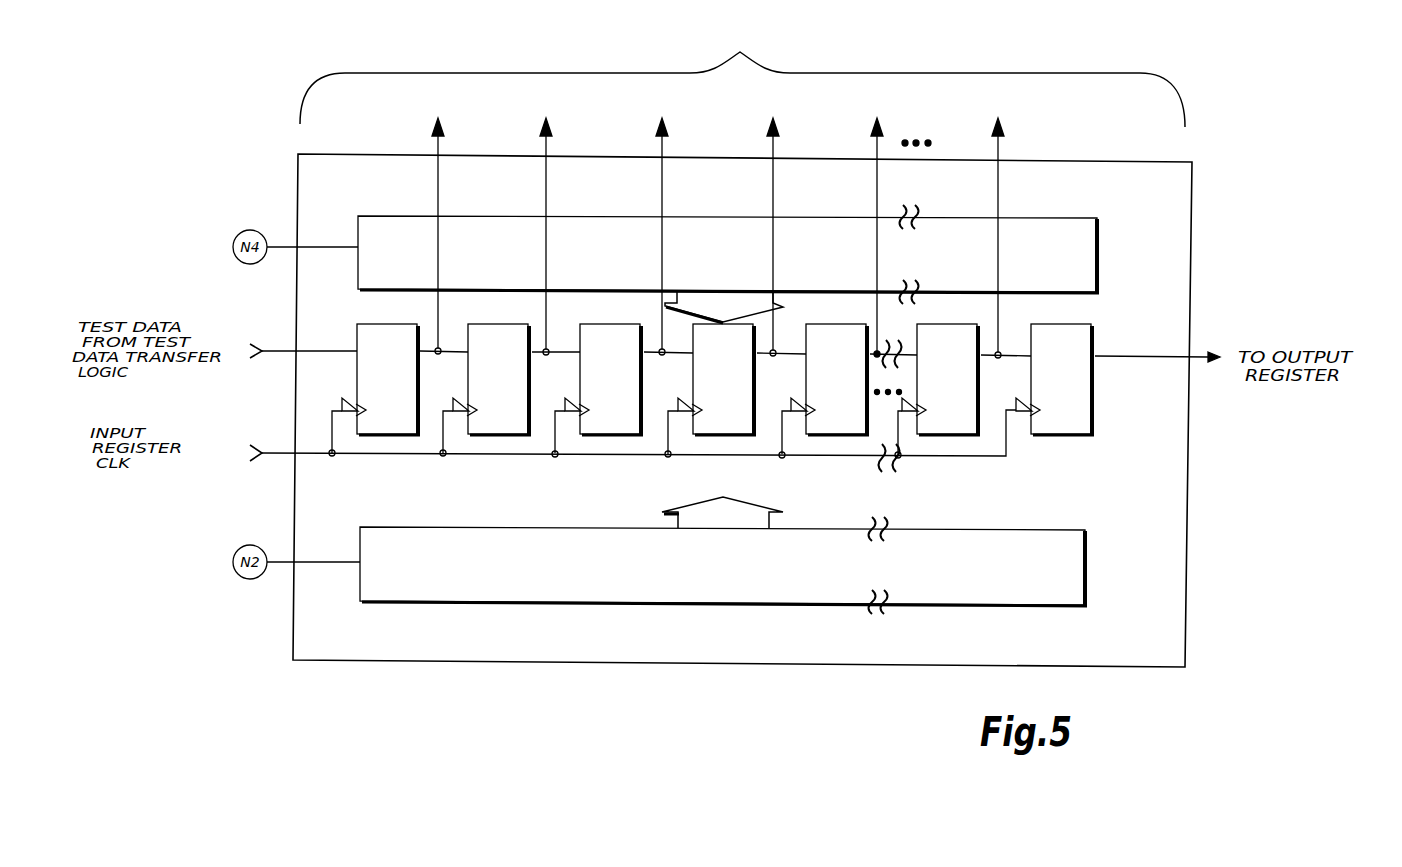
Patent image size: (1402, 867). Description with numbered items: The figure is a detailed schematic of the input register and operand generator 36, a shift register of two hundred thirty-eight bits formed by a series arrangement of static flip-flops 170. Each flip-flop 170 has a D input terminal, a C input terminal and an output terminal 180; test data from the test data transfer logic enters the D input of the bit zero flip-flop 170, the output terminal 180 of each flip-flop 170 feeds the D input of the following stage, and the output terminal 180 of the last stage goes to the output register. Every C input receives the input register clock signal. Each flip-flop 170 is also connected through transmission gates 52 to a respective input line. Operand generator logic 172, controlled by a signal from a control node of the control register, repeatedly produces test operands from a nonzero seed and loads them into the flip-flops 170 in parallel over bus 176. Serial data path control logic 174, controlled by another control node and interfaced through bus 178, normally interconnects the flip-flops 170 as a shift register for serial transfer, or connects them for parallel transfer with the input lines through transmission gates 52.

The input register and operand generator 36 is at (646, 664).
The transmission gates 52 is at (742, 76).
The static flip-flops 170 is at (402, 392).
The operand generator logic 172 is at (621, 266).
The serial data path control logic 174 is at (944, 578).
The bus 176 is at (735, 310).
The bus 178 is at (735, 521).
The output terminal 180 is at (420, 354).